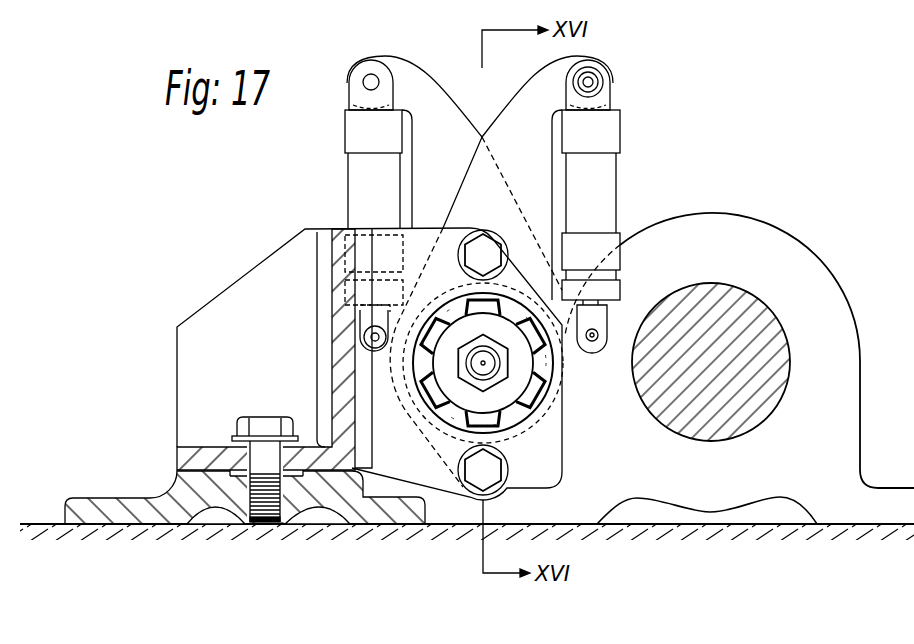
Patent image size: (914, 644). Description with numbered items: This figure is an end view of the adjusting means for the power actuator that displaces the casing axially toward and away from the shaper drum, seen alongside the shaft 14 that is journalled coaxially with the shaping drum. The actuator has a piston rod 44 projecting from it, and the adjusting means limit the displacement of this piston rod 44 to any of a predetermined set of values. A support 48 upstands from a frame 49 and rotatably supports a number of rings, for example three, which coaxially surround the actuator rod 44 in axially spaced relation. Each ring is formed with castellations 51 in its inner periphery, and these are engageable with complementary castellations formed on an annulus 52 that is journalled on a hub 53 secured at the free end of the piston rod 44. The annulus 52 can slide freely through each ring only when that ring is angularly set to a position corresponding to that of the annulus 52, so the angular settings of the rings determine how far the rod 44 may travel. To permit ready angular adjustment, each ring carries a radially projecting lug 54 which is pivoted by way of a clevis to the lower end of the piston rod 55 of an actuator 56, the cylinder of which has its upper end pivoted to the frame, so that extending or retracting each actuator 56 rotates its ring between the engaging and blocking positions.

The shaft 14 is at (727, 298).
The piston rod 44 is at (490, 365).
The support 48 is at (363, 513).
The frame 49 is at (307, 530).
The castellations 51 is at (503, 410).
The annulus 52 is at (537, 397).
The hub 53 is at (507, 398).
The lug 54 is at (607, 342).
The piston rod 55 is at (372, 331).
The actuator 56 is at (360, 180).